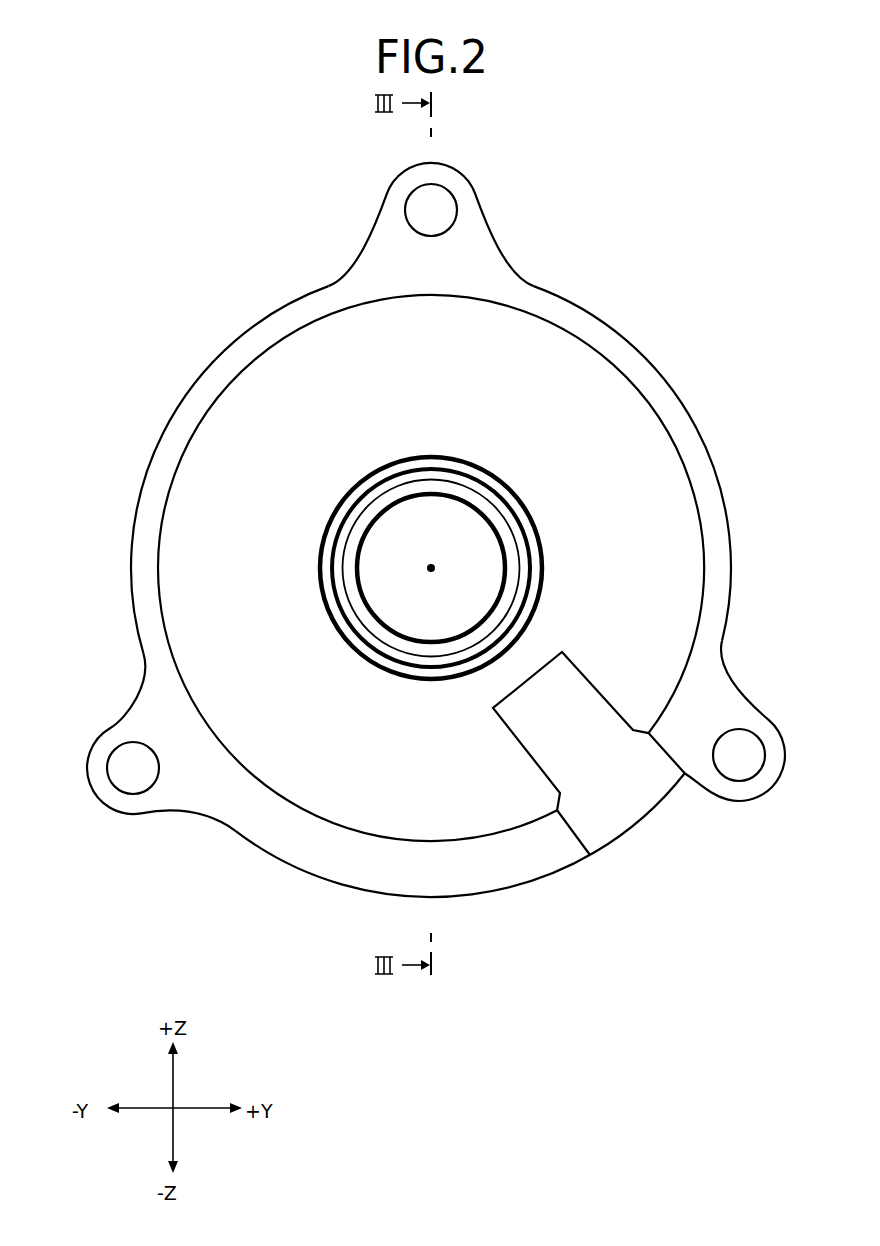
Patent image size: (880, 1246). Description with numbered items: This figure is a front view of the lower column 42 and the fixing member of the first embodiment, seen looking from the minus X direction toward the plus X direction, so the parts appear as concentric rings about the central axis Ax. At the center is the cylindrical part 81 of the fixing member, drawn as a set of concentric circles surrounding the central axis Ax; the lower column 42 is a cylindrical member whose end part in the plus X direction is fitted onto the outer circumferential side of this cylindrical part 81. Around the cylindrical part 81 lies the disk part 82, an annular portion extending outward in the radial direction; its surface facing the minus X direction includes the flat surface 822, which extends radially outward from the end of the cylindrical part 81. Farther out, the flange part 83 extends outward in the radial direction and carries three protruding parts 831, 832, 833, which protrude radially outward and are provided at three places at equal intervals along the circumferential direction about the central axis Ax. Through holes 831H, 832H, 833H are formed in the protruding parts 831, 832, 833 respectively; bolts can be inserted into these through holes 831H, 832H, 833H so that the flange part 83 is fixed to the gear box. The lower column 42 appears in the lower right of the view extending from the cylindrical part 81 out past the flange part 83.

The lower column 42 is at (458, 680).
The cylindrical part 81 is at (383, 637).
The disk part 82 is at (422, 561).
The flat surface 822 is at (298, 453).
The flange part 83 is at (698, 472).
The protruding part 831 is at (468, 253).
The through hole 831H is at (443, 197).
The protruding part 832 is at (128, 723).
The through hole 832H is at (128, 777).
The protruding part 833 is at (752, 720).
The through hole 833H is at (750, 770).
The central axis Ax is at (431, 568).